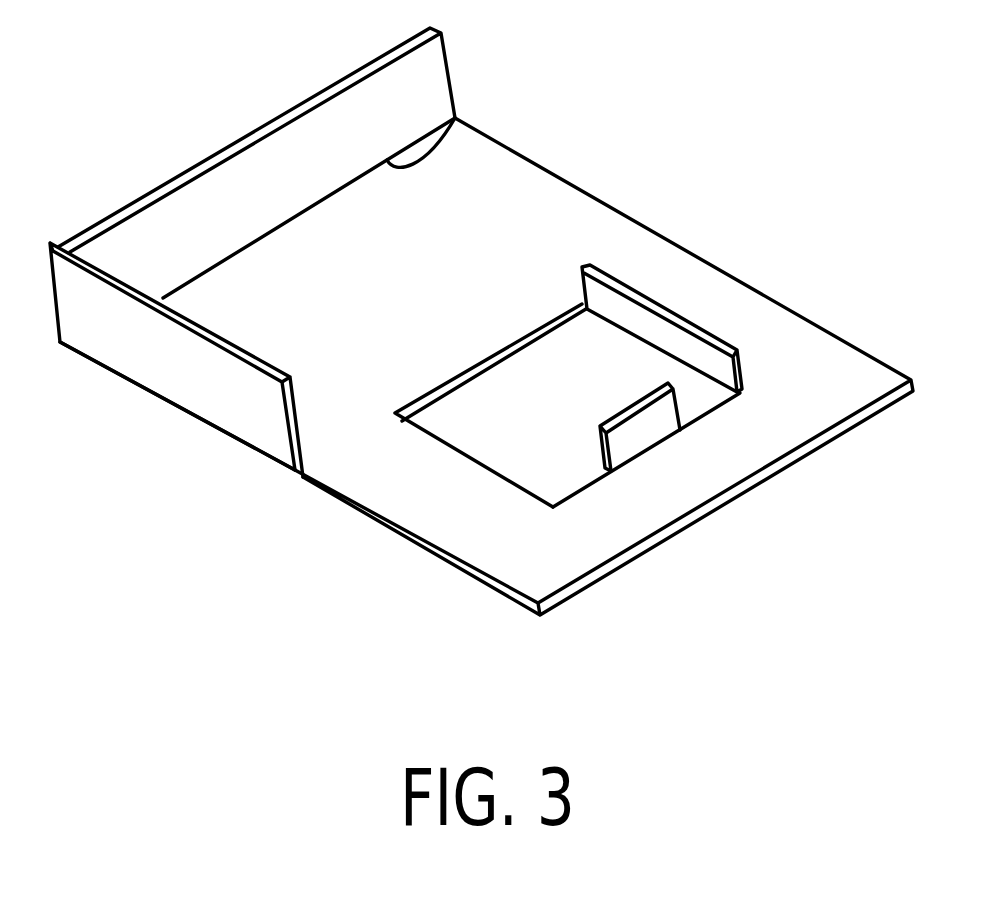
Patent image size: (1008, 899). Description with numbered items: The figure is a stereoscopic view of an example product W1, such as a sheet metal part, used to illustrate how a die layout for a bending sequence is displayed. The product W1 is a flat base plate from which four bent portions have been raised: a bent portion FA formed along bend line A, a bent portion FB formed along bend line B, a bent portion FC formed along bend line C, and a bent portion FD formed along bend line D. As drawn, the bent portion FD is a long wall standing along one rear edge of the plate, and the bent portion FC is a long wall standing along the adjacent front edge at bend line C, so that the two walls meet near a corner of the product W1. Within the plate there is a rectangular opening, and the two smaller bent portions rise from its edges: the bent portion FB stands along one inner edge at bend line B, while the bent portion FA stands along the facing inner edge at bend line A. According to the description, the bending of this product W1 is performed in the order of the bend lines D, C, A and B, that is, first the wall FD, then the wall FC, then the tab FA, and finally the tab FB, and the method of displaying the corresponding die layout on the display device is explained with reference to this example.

The product W1 is at (597, 217).
The bent portion FD is at (292, 135).
The bend line D is at (465, 140).
The bent portion FC is at (268, 437).
The bend line C is at (223, 436).
The bend line B is at (625, 335).
The bend line A is at (643, 452).
The bent portion FB is at (677, 313).
The bent portion FA is at (668, 418).